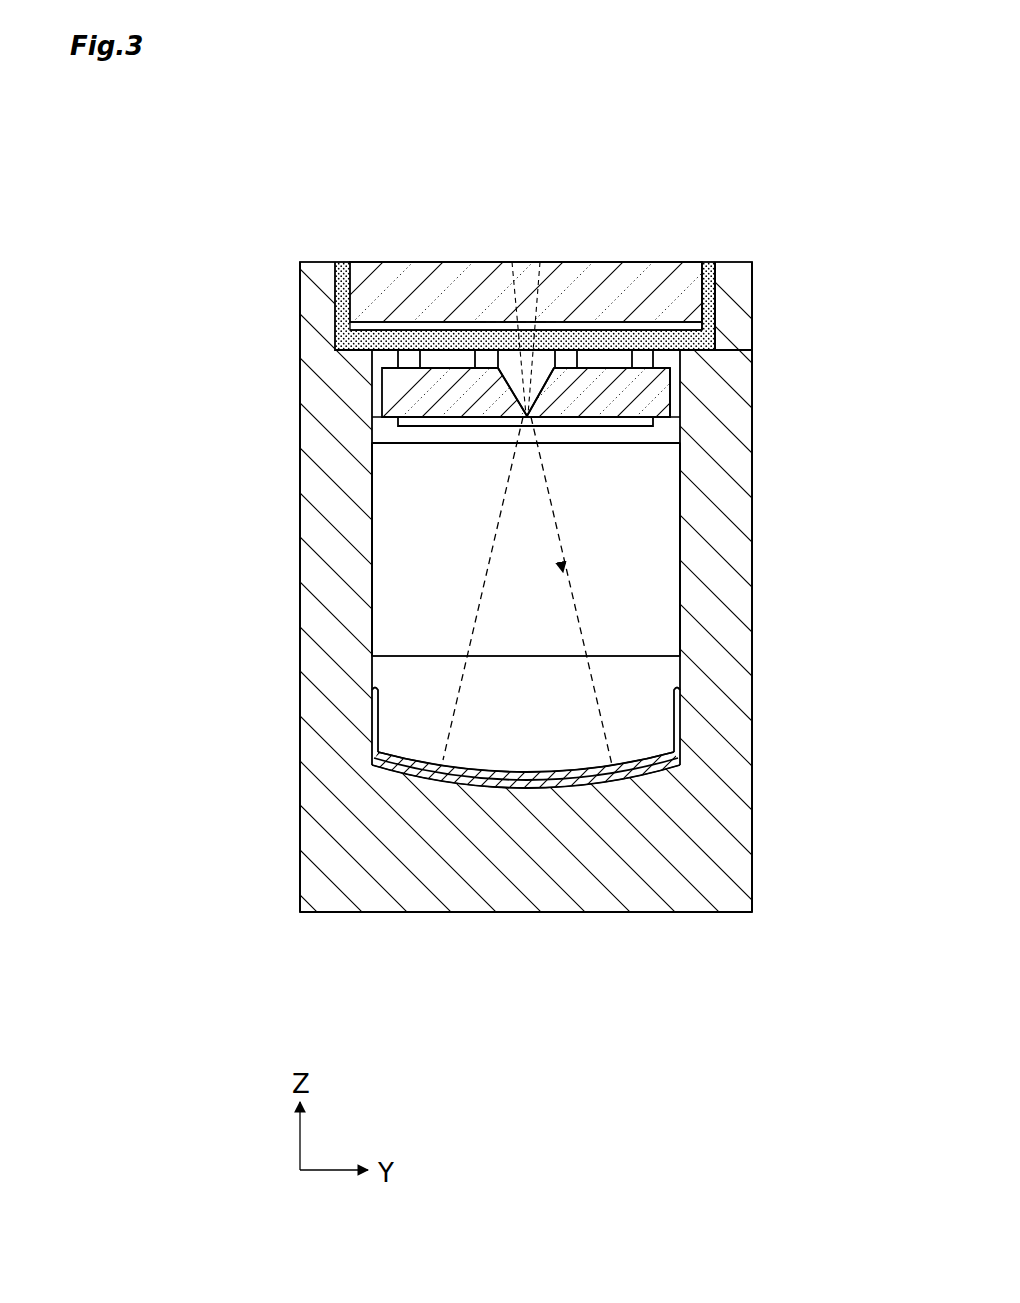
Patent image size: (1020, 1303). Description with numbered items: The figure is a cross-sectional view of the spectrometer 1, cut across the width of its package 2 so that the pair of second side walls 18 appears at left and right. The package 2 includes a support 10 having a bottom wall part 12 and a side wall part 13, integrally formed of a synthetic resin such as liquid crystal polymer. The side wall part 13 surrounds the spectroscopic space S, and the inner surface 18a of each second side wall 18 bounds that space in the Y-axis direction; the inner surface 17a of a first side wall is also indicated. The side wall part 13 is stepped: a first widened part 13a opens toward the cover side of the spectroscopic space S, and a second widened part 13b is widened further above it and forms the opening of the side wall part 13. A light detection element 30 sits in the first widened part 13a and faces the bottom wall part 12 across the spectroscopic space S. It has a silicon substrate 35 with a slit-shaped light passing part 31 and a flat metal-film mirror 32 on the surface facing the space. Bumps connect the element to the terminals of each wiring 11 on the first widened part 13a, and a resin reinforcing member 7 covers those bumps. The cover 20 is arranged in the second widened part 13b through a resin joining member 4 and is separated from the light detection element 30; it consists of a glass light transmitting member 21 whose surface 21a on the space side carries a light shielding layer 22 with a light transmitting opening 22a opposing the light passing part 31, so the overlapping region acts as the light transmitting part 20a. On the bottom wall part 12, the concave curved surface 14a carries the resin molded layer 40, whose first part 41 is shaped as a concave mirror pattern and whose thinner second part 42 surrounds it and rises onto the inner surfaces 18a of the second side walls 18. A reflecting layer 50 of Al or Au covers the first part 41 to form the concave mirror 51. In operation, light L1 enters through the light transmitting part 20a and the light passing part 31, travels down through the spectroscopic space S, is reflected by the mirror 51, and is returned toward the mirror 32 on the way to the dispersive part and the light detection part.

The spectrometer 1 is at (653, 128).
The package 2 is at (298, 859).
The joining member 4 is at (713, 262).
The reinforcing member 7 is at (372, 432).
The support 10 is at (378, 912).
The wiring 11 is at (484, 348).
The bottom wall part 12 is at (690, 905).
The side wall part 13 is at (727, 262).
The first widened part 13a is at (680, 427).
The second widened part 13b is at (716, 343).
The concave curved surface 14a is at (545, 770).
The inner surface of first side wall 17a is at (430, 625).
The second side walls 18 is at (305, 525).
The inner surface of second side wall 18a is at (372, 553).
The cover 20 is at (372, 262).
The light transmitting part 20a is at (578, 283).
The light transmitting member 21 is at (340, 305).
The surface of light transmitting member 21a is at (340, 340).
The light shielding layer 22 is at (710, 326).
The light transmitting opening 22a is at (500, 330).
The light detection element 30 is at (380, 390).
The light passing part 31 is at (550, 383).
The mirror 32 is at (448, 427).
The substrate 35 is at (674, 387).
The resin molded layer 40 is at (493, 787).
The first part 41 is at (532, 783).
The second part 42 is at (372, 718).
The reflecting layer 50 is at (570, 790).
The mirror 51 is at (488, 770).
The spectroscopic space S is at (543, 620).
The light L1 is at (552, 510).